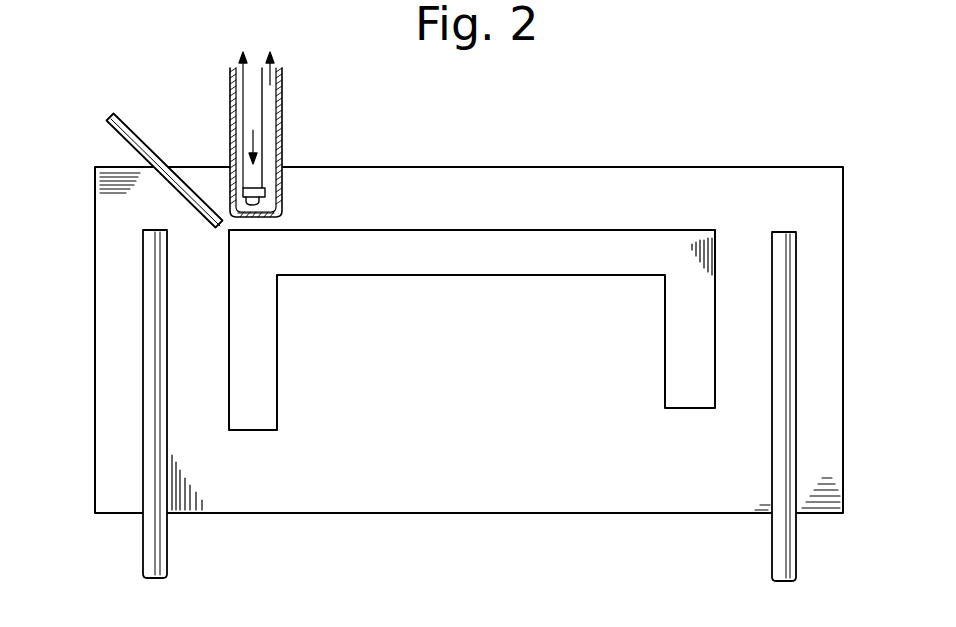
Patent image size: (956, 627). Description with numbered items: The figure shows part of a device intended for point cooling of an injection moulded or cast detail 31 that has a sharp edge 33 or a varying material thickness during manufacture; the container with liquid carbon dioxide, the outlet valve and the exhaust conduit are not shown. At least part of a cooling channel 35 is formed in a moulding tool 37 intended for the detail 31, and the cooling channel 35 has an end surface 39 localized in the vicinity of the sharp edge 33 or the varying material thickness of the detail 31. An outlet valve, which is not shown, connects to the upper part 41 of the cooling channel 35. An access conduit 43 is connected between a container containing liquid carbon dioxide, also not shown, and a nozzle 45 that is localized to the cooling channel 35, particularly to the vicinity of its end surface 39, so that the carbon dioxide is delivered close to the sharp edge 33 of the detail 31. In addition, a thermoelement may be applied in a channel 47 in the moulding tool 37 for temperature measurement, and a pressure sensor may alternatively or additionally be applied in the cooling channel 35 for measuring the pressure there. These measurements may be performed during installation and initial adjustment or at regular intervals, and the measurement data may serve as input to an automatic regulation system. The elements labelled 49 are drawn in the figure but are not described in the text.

The injection moulded or cast detail 31 is at (493, 243).
The sharp edge 33 is at (228, 237).
The cooling channel 35 is at (268, 126).
The moulding tool 37 is at (820, 293).
The end surface 39 is at (268, 222).
The upper part of the cooling channel 41 is at (238, 92).
The access conduit 43 is at (252, 112).
The nozzle 45 is at (243, 193).
The channel 47 is at (122, 135).
The support bars 49 is at (150, 434).